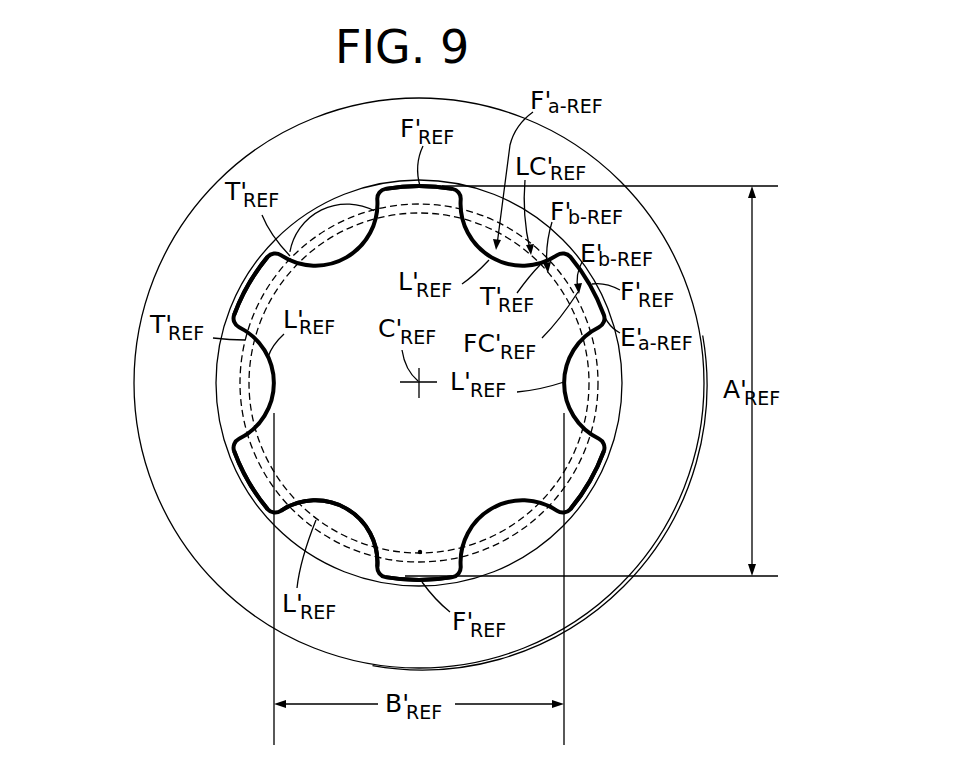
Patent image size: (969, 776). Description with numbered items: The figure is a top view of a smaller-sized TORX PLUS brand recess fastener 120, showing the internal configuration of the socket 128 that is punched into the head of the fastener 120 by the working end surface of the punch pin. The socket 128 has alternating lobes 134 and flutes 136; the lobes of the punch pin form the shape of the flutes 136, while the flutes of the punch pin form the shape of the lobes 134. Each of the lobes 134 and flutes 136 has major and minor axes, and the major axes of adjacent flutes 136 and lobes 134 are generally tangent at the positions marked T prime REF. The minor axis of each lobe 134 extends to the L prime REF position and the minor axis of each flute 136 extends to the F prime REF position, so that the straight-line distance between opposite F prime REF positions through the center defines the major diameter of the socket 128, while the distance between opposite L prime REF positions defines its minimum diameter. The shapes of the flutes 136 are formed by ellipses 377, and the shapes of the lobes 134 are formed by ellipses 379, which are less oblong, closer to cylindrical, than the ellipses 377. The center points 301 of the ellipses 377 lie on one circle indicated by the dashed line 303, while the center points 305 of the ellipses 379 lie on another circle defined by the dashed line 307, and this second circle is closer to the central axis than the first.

The fastener 120 is at (134, 222).
The socket 128 is at (268, 410).
The lobes 134 is at (317, 260).
The flutes 136 is at (250, 281).
The center points 301 is at (262, 290).
The dashed line 303 is at (283, 490).
The center points 305 is at (465, 194).
The dashed line 307 is at (420, 552).
The ellipses 377 is at (281, 285).
The ellipses 379 is at (358, 205).